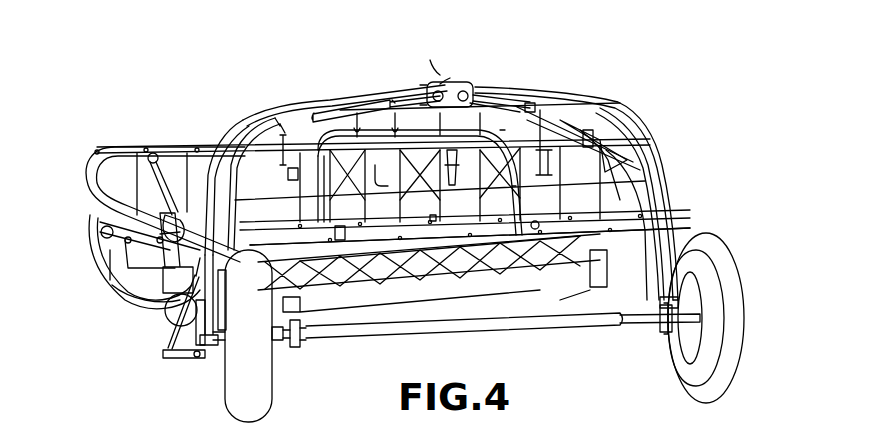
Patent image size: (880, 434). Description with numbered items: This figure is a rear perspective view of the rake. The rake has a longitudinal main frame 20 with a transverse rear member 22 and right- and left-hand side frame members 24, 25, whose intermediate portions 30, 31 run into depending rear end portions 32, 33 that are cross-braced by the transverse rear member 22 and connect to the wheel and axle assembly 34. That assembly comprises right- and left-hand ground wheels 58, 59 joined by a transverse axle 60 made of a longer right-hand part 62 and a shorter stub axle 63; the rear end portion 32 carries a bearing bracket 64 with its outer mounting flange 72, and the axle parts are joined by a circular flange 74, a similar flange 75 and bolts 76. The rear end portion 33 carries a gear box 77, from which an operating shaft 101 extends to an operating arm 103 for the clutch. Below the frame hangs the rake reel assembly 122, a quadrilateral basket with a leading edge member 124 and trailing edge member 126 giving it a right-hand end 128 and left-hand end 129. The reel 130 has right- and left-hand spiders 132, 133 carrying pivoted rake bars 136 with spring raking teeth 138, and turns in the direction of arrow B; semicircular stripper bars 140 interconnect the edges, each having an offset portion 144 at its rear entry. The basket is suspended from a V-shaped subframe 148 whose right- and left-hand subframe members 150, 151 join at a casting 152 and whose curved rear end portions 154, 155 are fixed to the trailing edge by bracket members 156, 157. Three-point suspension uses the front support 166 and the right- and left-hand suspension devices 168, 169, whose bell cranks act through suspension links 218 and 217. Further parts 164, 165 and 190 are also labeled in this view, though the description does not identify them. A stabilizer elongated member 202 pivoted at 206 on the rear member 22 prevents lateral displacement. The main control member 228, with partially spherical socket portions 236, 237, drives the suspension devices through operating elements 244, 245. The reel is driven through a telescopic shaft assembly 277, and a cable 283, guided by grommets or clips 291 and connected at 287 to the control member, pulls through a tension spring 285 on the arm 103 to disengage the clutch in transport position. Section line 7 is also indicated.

The section line 7 is at (281, 100).
The main frame 20 is at (654, 122).
The transverse rear member 22 is at (670, 212).
The right-hand side frame member 24 is at (622, 104).
The left-hand side frame member 25 is at (246, 112).
The intermediate portion 30 is at (583, 100).
The intermediate portion 31 is at (341, 99).
The rear end portion 32 is at (675, 236).
The rear end portion 33 is at (215, 298).
The wheel and axle assembly 34 is at (457, 348).
The right-hand ground wheel 58 is at (735, 380).
The left-hand ground wheel 59 is at (245, 412).
The transverse axle 60 is at (413, 332).
The right-hand axle part 62 is at (530, 328).
The stub axle 63 is at (276, 340).
The bearing bracket 64 is at (660, 302).
The outer mounting flange 72 is at (664, 333).
The circular flange 74 is at (304, 342).
The flange 75 is at (302, 346).
The bolts 76 is at (288, 348).
The gear box 77 is at (178, 328).
The operating shaft 101 is at (197, 360).
The operating arm 103 is at (183, 358).
The rake reel assembly 122 is at (91, 149).
The leading edge member 124 is at (122, 147).
The trailing edge member 126 is at (656, 232).
The right-hand end 128 is at (655, 142).
The left-hand end 129 is at (88, 193).
The reel 130 is at (157, 140).
The right-hand spider 132 is at (660, 190).
The left-hand spider 133 is at (100, 220).
The rake bars 136 is at (652, 164).
The spring raking teeth 138 is at (110, 265).
The stripper bars 140 is at (410, 288).
The offset portion 144 is at (445, 280).
The subframe 148 is at (520, 98).
The right-hand subframe member 150 is at (505, 118).
The left-hand subframe member 151 is at (345, 135).
The casting 152 is at (378, 108).
The rear end portion 154 is at (514, 178).
The rear end portion 155 is at (330, 180).
The bracket member 156 is at (533, 225).
The bracket member 157 is at (326, 238).
The valve 164 is at (470, 150).
The cylinder 165 is at (355, 112).
The front support 166 is at (403, 165).
The right-hand suspension device 168 is at (612, 92).
The left-hand suspension device 169 is at (300, 128).
The hook 190 is at (388, 177).
The elongated member 202 is at (262, 243).
The pivot 206 is at (438, 218).
The suspension links 217 is at (288, 182).
The suspension links 218 is at (555, 167).
The main control member 228 is at (486, 72).
The annular marginal portion 236 is at (525, 75).
The annular partially spherical portion 237 is at (445, 78).
The operating element 244 is at (537, 100).
The operating element 245 is at (400, 86).
The telescopic shaft assembly 277 is at (178, 272).
The cable 283 is at (244, 278).
The tension spring 285 is at (170, 340).
The front connection 287 is at (432, 78).
The grommets or clips 291 is at (240, 138).
The arrow B is at (111, 192).